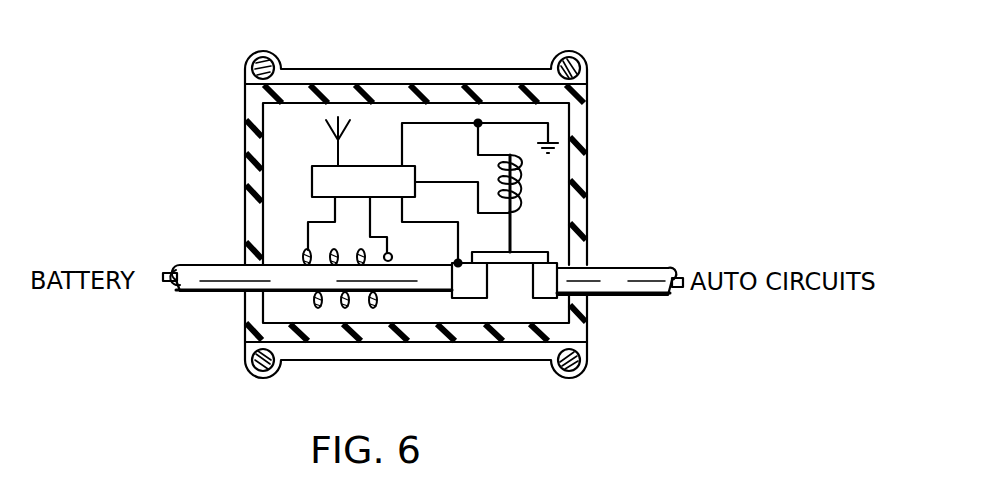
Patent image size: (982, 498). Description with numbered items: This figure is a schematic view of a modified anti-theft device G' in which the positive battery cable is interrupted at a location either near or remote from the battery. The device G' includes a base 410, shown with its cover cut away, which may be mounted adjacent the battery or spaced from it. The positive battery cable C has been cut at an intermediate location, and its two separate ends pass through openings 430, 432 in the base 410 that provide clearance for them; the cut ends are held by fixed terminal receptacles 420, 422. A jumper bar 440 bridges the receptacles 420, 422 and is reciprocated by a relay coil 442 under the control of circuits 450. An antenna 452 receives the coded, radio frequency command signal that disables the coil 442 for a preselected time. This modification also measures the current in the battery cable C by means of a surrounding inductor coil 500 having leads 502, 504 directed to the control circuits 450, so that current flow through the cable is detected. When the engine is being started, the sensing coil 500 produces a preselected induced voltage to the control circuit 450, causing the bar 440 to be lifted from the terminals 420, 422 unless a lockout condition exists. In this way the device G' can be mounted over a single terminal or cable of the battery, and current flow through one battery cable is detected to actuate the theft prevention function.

The base 410 is at (555, 188).
The antenna 452 is at (338, 117).
The control circuits 450 is at (389, 166).
The lead 502 is at (308, 222).
The lead 504 is at (372, 215).
The relay coil 442 is at (522, 178).
The jumper bar 440 is at (545, 251).
The fixed terminal receptacle 420 is at (465, 288).
The fixed terminal receptacle 422 is at (558, 298).
The opening 430 is at (245, 290).
The opening 432 is at (602, 268).
The inductor coil 500 is at (345, 306).
The cable C is at (200, 262).
The anti-theft device G' is at (553, 419).